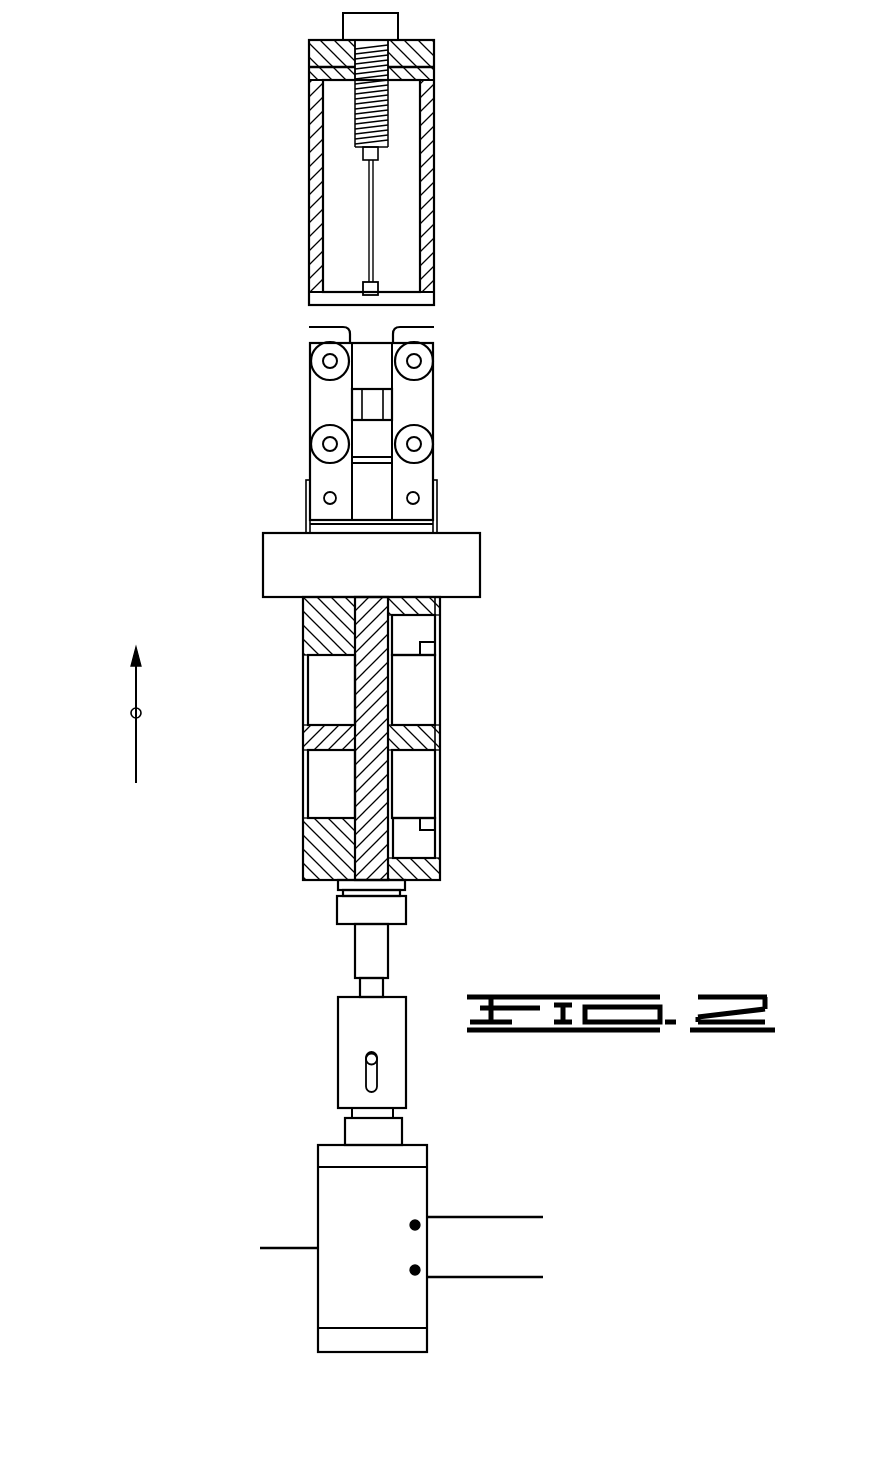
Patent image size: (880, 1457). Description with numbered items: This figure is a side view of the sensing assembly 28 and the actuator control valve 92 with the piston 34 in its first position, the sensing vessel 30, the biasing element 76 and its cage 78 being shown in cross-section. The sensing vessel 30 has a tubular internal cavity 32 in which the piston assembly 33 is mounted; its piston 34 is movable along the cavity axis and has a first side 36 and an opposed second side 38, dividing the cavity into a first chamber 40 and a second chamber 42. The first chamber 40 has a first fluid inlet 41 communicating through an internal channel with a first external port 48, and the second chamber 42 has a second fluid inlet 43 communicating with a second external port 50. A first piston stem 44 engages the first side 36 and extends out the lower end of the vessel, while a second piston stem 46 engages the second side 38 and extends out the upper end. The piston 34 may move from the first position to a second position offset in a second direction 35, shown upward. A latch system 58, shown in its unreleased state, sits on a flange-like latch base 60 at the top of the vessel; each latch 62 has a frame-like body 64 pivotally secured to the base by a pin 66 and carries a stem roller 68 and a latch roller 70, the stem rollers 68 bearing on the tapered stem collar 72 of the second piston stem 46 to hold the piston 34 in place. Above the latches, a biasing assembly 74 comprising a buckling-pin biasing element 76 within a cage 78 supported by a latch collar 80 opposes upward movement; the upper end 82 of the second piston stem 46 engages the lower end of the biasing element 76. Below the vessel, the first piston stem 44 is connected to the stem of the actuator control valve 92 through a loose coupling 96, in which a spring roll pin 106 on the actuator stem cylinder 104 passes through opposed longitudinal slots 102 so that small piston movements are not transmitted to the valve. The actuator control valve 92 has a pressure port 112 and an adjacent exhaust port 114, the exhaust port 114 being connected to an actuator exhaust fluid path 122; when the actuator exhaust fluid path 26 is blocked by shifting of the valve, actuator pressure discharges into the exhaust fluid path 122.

The actuator exhaust fluid path 26 is at (285, 1246).
The sensing assembly 28 is at (332, 628).
The sensing vessel 30 is at (378, 628).
The internal cavity 32 is at (320, 672).
The piston assembly 33 is at (448, 746).
The piston 34 is at (318, 745).
The second direction 35 is at (131, 713).
The first side 36 is at (322, 770).
The second side 38 is at (332, 722).
The first chamber 40 is at (420, 770).
The first fluid inlet 41 is at (420, 812).
The second chamber 42 is at (418, 692).
The second fluid inlet 43 is at (432, 650).
The first piston stem 44 is at (323, 798).
The second piston stem 46 is at (387, 303).
The first external port 48 is at (436, 850).
The second external port 50 is at (440, 616).
The latch system 58 is at (364, 435).
The latch base 60 is at (468, 562).
The latch 62 is at (327, 398).
The body 64 is at (327, 420).
The pin 66 is at (318, 498).
The stem roller 68 is at (312, 445).
The latch roller 70 is at (312, 362).
The stem collar 72 is at (377, 503).
The biasing assembly 74 is at (370, 159).
The biasing element 76 is at (373, 210).
The cage 78 is at (318, 118).
The latch collar 80 is at (325, 317).
The upper end 82 is at (362, 293).
The actuator control valve 92 is at (390, 1248).
The loose coupling 96 is at (395, 1052).
The longitudinal slots 102 is at (363, 1068).
The actuator stem cylinder 104 is at (352, 1112).
The spring roll pin 106 is at (377, 1058).
The pressure port 112 is at (418, 1273).
The exhaust port 114 is at (418, 1222).
The actuator exhaust fluid path 122 is at (478, 1217).